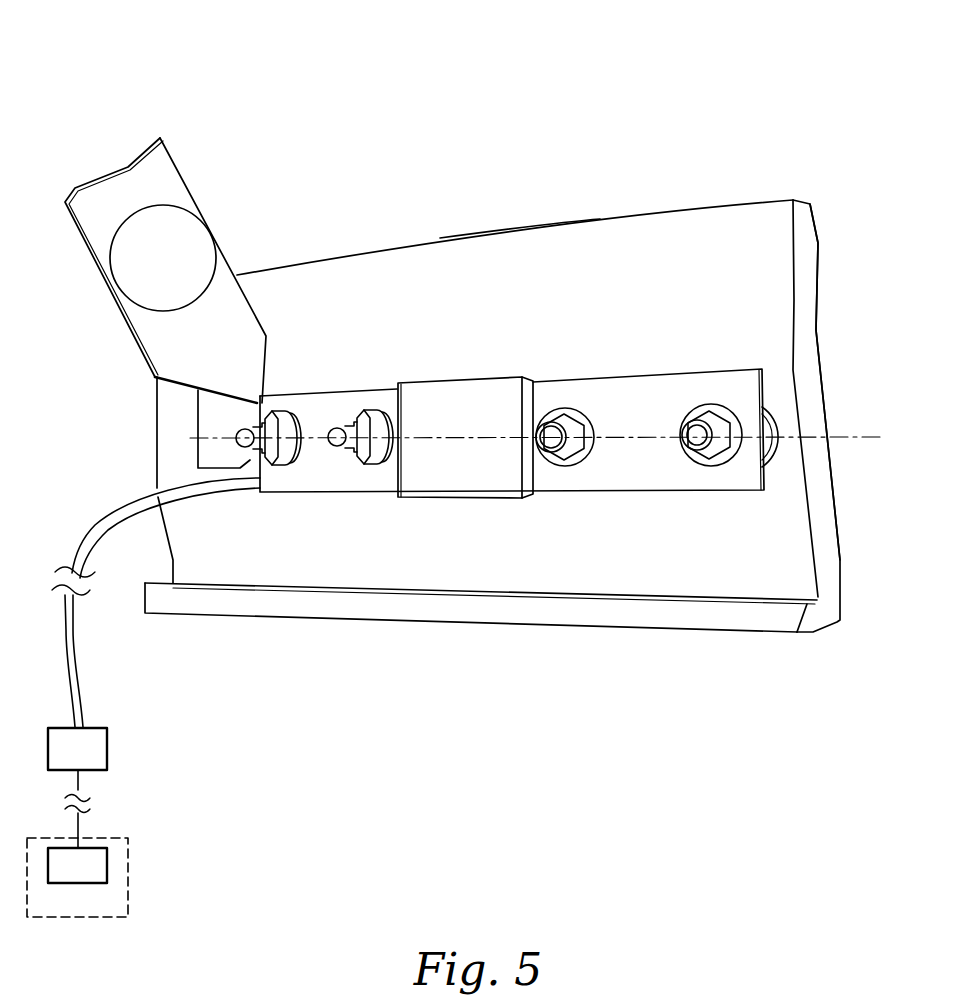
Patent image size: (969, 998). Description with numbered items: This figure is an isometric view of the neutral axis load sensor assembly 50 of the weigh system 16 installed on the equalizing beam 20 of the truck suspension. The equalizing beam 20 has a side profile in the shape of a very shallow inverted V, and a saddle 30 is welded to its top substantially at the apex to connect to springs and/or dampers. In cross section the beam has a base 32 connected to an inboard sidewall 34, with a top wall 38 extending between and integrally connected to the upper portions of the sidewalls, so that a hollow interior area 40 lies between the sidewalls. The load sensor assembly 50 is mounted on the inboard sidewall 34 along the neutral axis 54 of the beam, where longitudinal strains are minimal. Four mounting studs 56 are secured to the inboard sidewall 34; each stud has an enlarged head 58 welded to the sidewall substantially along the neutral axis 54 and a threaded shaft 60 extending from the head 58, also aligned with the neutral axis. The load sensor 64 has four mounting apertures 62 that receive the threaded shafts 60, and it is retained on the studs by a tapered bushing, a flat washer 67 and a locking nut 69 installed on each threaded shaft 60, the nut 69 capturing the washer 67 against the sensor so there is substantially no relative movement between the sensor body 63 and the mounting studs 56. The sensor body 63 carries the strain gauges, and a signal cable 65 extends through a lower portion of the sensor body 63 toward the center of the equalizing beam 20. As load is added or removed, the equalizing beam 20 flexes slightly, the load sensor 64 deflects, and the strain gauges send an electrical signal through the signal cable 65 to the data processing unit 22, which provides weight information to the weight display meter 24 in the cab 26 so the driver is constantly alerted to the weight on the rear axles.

The weigh system 16 is at (115, 80).
The equalizing beam 20 is at (710, 215).
The data processing unit 22 is at (102, 750).
The weight display meter 24 is at (102, 867).
The cab 26 is at (128, 900).
The saddle 30 is at (183, 238).
The base 32 is at (662, 617).
The inboard sidewall 34 is at (597, 270).
The top wall 38 is at (438, 240).
The hollow interior area 40 is at (668, 252).
The load sensor assembly 50 is at (827, 267).
The neutral axis 54 is at (838, 430).
The mounting studs 56 is at (246, 432).
The enlarged head 58 is at (777, 453).
The threaded shaft 60 is at (697, 463).
The mounting apertures 62 is at (727, 458).
The sensor body 63 is at (673, 483).
The load sensor 64 is at (487, 390).
The signal cable 65 is at (107, 520).
The flat washer 67 is at (367, 460).
The locking nut 69 is at (370, 457).